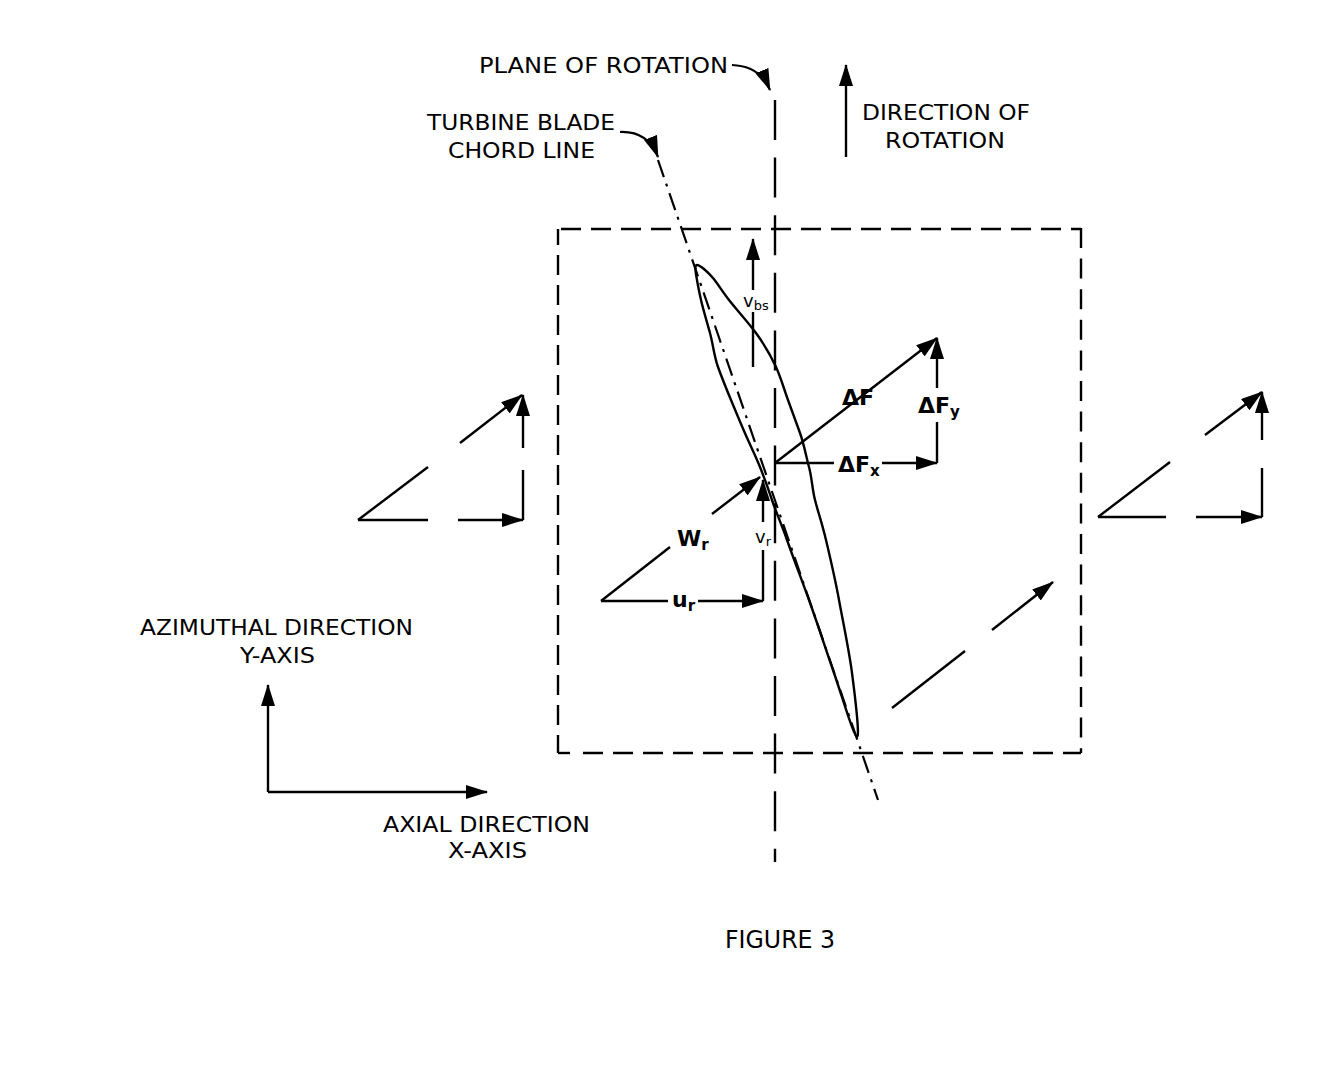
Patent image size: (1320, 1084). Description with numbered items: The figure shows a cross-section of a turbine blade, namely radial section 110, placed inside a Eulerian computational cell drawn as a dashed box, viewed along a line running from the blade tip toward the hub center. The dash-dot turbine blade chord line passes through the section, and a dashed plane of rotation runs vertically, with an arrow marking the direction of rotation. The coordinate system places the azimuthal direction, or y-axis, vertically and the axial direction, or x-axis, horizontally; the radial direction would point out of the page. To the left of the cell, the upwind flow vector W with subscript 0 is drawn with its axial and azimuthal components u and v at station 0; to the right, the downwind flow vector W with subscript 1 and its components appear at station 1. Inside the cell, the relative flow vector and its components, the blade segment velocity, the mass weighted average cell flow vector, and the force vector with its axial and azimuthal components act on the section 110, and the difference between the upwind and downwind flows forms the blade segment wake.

The radial section 110 is at (828, 612).
The upstream velocity triangle (station 0) 0 is at (446, 465).
The downstream velocity triangle (station 1) 1 is at (1186, 462).